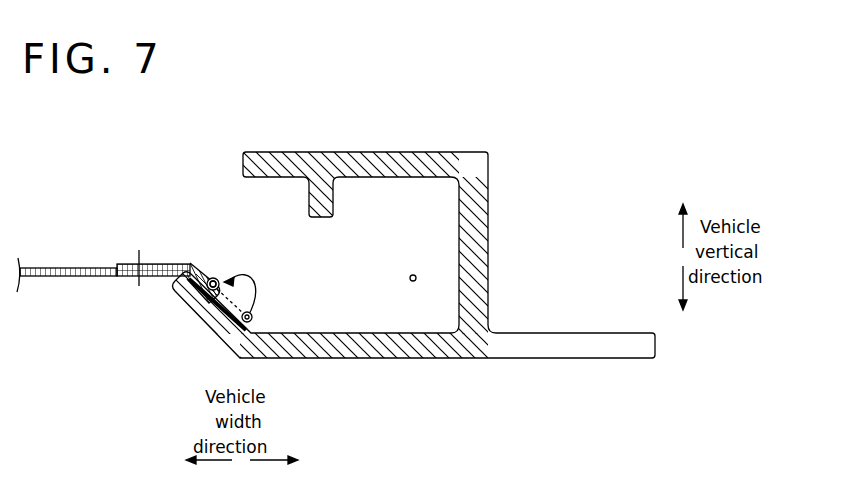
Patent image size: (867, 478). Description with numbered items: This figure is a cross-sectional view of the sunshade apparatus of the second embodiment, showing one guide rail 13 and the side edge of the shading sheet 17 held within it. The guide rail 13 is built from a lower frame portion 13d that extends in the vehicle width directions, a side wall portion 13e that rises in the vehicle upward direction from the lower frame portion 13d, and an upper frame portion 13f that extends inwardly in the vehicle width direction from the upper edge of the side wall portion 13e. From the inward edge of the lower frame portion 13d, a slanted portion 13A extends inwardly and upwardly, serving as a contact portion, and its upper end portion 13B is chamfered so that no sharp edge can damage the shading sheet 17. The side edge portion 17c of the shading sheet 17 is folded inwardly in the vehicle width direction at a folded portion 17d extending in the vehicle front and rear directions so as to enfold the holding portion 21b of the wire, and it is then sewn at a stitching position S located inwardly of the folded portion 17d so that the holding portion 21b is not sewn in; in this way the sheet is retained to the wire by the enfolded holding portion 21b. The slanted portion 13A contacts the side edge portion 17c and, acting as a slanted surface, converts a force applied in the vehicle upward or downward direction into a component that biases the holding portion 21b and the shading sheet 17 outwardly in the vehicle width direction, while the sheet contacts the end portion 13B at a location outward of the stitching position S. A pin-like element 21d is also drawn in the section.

The guide rail 13 is at (492, 154).
The upper frame portion 13f is at (327, 165).
The side wall portion 13e is at (475, 247).
The lower frame portion 13d is at (377, 345).
The slanted portion 13A is at (206, 304).
The end portion 13B is at (186, 278).
The shading sheet 17 is at (31, 264).
The side edge portion 17c is at (186, 256).
The folded portion 17d is at (222, 298).
The holding portion 21b is at (207, 270).
The pin 21d is at (415, 282).
The stitching position S is at (137, 248).